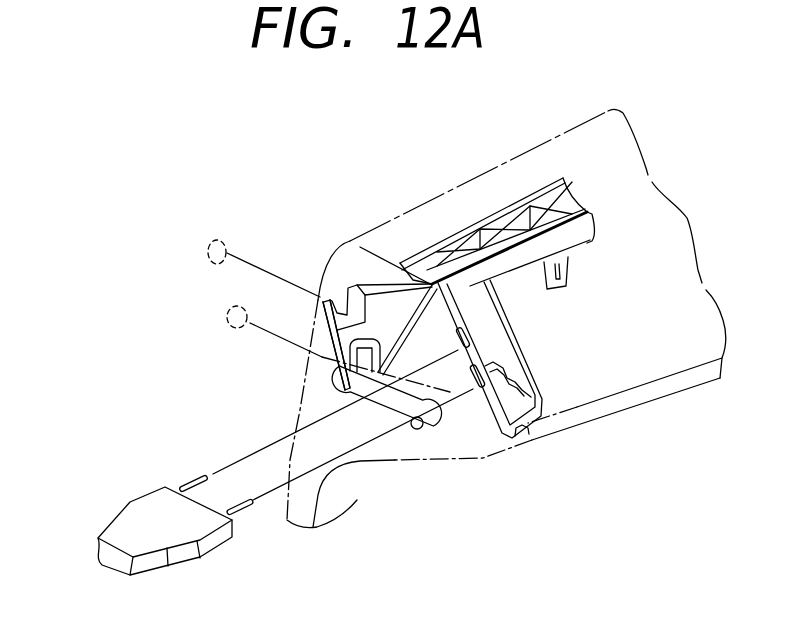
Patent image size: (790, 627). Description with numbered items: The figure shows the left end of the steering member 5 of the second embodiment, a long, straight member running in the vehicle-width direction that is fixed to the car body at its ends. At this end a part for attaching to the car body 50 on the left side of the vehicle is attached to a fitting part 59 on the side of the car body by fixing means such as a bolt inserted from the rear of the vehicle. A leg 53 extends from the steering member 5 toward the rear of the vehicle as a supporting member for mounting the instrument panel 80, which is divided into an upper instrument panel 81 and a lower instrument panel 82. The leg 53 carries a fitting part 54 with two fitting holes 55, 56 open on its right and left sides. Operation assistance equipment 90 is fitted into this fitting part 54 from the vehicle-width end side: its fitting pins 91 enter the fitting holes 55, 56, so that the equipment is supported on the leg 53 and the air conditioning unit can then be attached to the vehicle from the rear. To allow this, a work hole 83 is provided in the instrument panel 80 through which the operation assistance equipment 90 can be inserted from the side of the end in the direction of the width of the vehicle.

The steering member 5 is at (533, 196).
The part for attaching to the car body 50 is at (330, 286).
The leg 53 is at (516, 354).
The fitting part 54 is at (525, 533).
The fitting hole 55 is at (447, 427).
The fitting hole 56 is at (472, 425).
The fitting part on the side of the car body 59 is at (230, 308).
The instrument panel 80 is at (218, 360).
The upper instrument panel 81 is at (330, 364).
The lower instrument panel 82 is at (284, 404).
The work hole 83 is at (412, 445).
The operation assistance equipment 90 is at (147, 508).
The fitting pins 91 is at (240, 497).